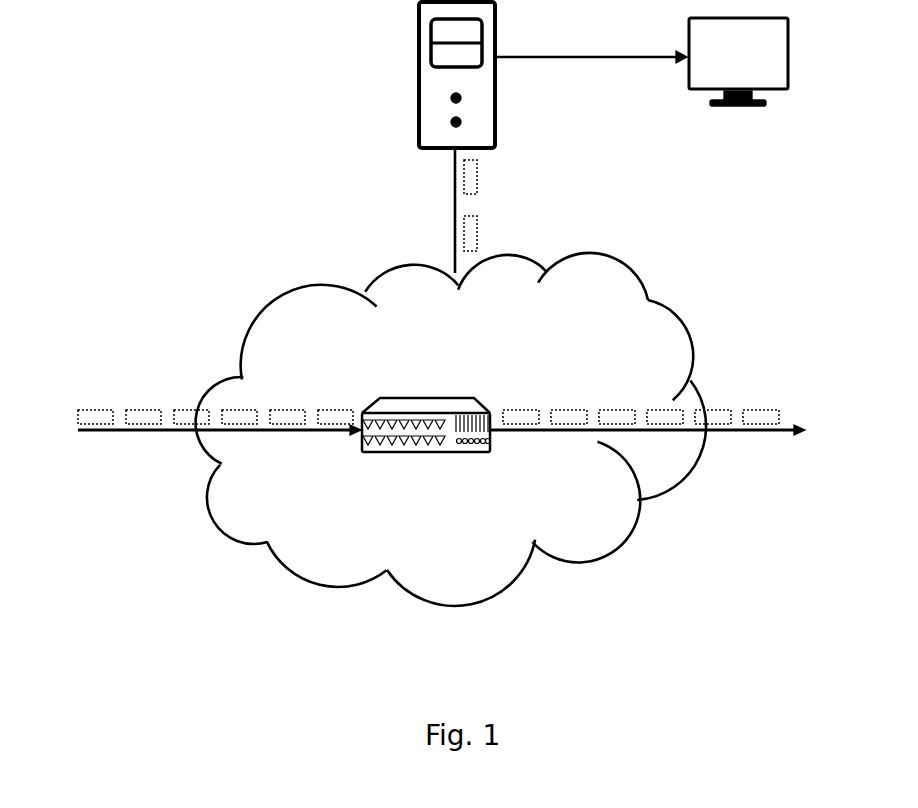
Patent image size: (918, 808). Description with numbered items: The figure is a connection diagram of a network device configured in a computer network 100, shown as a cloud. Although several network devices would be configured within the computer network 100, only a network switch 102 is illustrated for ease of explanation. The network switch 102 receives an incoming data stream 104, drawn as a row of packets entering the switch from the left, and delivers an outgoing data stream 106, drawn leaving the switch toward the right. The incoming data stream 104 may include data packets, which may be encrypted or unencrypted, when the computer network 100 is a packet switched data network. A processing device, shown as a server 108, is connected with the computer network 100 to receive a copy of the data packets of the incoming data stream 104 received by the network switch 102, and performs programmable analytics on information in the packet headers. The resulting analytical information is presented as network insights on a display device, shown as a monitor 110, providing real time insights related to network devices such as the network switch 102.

The computer network 100 is at (653, 290).
The network switch 102 is at (405, 454).
The incoming data stream 104 is at (98, 434).
The outgoing data stream 106 is at (723, 433).
The server 108 is at (500, 123).
The monitor 110 is at (745, 107).